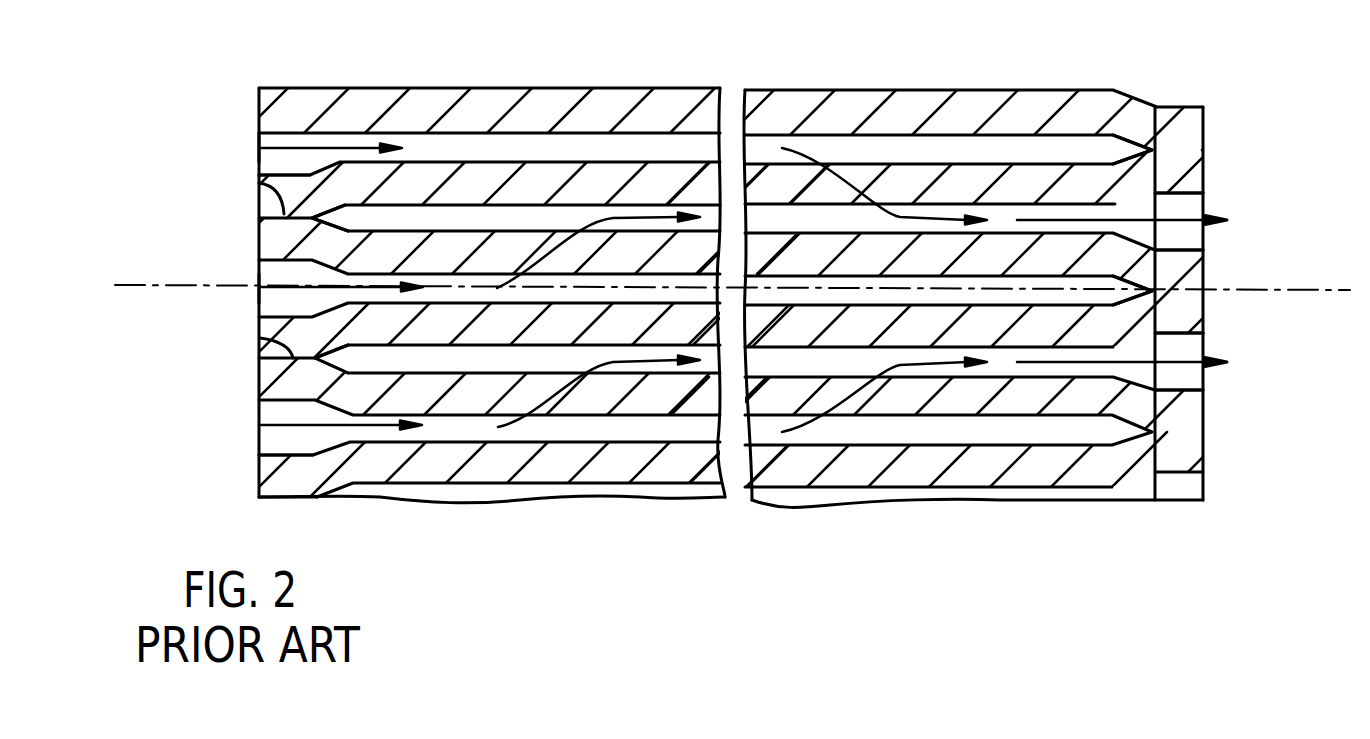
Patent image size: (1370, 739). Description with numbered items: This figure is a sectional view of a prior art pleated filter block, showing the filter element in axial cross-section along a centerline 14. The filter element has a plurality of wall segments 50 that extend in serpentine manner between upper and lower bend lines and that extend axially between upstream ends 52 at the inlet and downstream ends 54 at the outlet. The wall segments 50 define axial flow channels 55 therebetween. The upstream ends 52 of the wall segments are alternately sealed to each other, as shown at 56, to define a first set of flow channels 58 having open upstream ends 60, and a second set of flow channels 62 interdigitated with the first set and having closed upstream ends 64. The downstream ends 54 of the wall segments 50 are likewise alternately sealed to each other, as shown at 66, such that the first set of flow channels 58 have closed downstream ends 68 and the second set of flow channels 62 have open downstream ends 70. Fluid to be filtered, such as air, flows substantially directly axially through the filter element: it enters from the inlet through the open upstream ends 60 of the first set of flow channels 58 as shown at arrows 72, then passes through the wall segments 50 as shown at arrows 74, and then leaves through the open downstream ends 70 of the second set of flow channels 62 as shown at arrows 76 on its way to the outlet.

The longitudinal axis 14 is at (168, 286).
The wall segments 50 is at (722, 289).
The upstream ends 52 is at (259, 102).
The downstream ends 54 is at (1203, 128).
The axial flow channels 55 is at (632, 150).
The sealed upstream ends 56 is at (259, 183).
The first set of flow channels 58 is at (273, 165).
The open upstream ends 60 is at (259, 137).
The second set of flow channels 62 is at (315, 218).
The closed upstream ends 64 is at (259, 217).
The sealed downstream ends 66 is at (1180, 290).
The closed downstream ends 68 is at (1203, 150).
The open downstream ends 70 is at (1203, 203).
The arrows 72 is at (317, 143).
The arrows 74 is at (613, 222).
The arrows 76 is at (1227, 220).